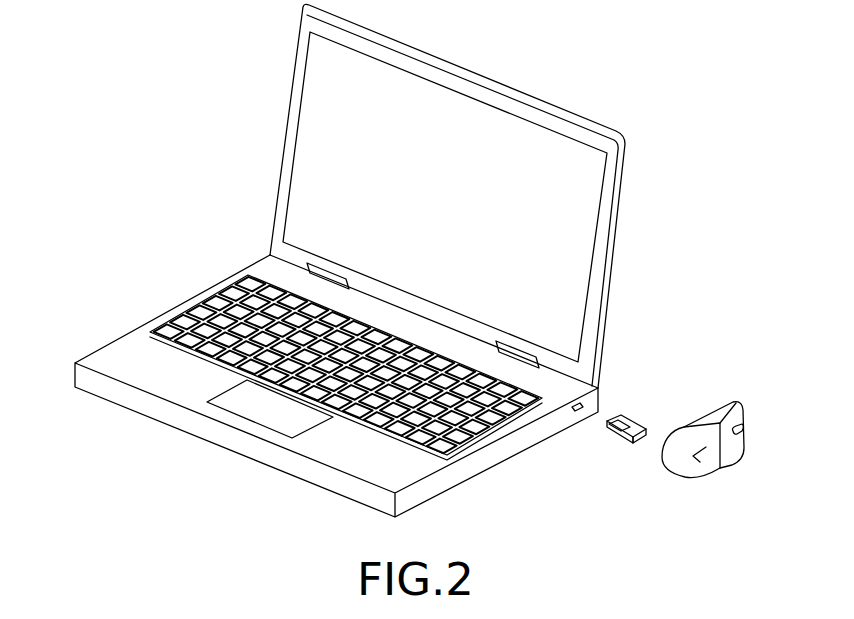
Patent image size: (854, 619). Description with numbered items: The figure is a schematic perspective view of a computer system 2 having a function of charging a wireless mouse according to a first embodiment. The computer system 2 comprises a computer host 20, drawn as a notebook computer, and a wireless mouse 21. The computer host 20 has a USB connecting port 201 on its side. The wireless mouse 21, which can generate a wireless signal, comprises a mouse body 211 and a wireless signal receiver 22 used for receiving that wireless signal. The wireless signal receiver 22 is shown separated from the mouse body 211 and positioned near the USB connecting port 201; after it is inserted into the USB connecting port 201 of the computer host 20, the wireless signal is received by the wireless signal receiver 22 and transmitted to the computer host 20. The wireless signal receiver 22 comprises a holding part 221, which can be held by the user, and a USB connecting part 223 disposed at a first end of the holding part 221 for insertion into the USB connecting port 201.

The computer system 2 is at (415, 279).
The computer host 20 is at (372, 260).
The USB connecting port 201 is at (588, 386).
The wireless mouse 21 is at (709, 478).
The mouse body 211 is at (688, 472).
The wireless signal receiver 22 is at (645, 454).
The holding part 221 is at (636, 421).
The USB connecting part 223 is at (607, 432).